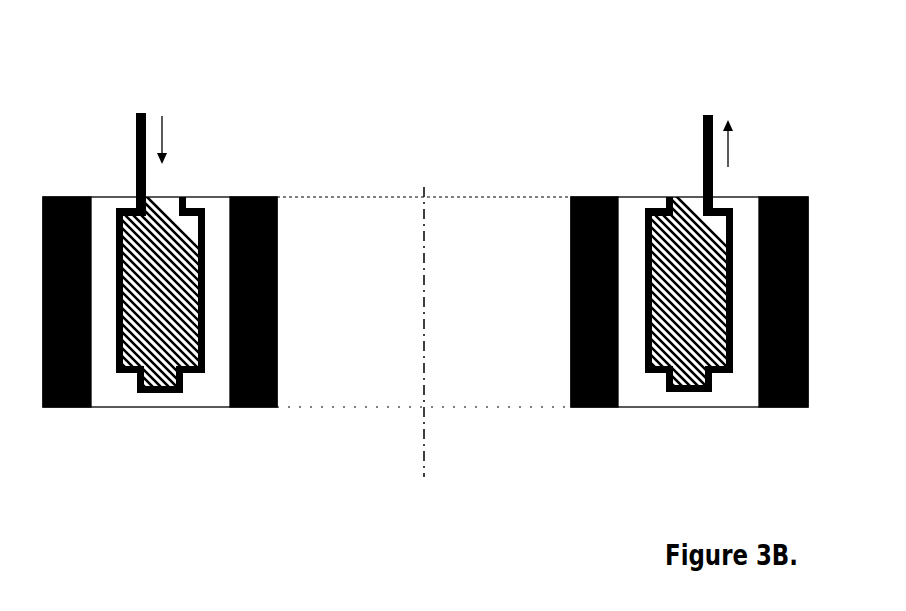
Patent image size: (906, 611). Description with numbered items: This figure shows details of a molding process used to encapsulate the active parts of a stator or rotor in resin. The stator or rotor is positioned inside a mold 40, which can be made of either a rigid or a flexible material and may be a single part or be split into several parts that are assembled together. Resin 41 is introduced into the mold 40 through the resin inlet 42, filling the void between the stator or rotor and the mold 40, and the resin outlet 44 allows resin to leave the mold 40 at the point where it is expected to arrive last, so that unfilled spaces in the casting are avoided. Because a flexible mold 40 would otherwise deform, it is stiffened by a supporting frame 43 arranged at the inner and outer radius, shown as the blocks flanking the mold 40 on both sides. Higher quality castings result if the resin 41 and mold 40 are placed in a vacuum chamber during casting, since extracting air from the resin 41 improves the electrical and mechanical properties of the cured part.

The mold 40 is at (197, 395).
The resin 41 is at (723, 372).
The resin inlet 42 is at (170, 139).
The supporting frame 43 is at (67, 407).
The resin outlet 44 is at (740, 148).